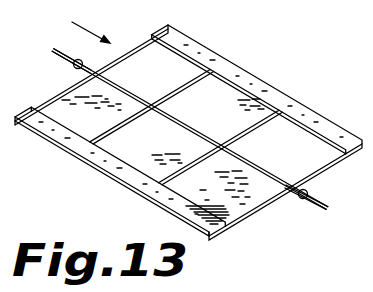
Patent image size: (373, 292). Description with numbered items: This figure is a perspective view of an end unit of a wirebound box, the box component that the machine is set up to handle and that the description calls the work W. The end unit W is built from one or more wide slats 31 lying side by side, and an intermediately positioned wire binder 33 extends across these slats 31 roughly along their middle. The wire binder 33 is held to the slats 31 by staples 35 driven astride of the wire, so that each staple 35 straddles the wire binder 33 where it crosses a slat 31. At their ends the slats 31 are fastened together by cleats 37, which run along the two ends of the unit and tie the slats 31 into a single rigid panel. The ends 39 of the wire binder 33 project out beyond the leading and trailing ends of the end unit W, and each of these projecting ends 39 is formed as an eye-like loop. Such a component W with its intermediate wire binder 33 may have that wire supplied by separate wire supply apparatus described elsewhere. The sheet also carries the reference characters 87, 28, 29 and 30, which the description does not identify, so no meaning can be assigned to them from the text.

The wide slats 31 is at (54, 98).
The wire binder 33 is at (180, 126).
The staples 35 is at (135, 100).
The cleats 37 is at (247, 78).
The ends of the wire binder 39 is at (73, 63).
The pin 87 is at (77, 63).
The work (end unit) W is at (280, 87).
The partial numeral 28 is at (362, 58).
The partial numeral 29 is at (361, 53).
The partial numeral 30 is at (362, 240).